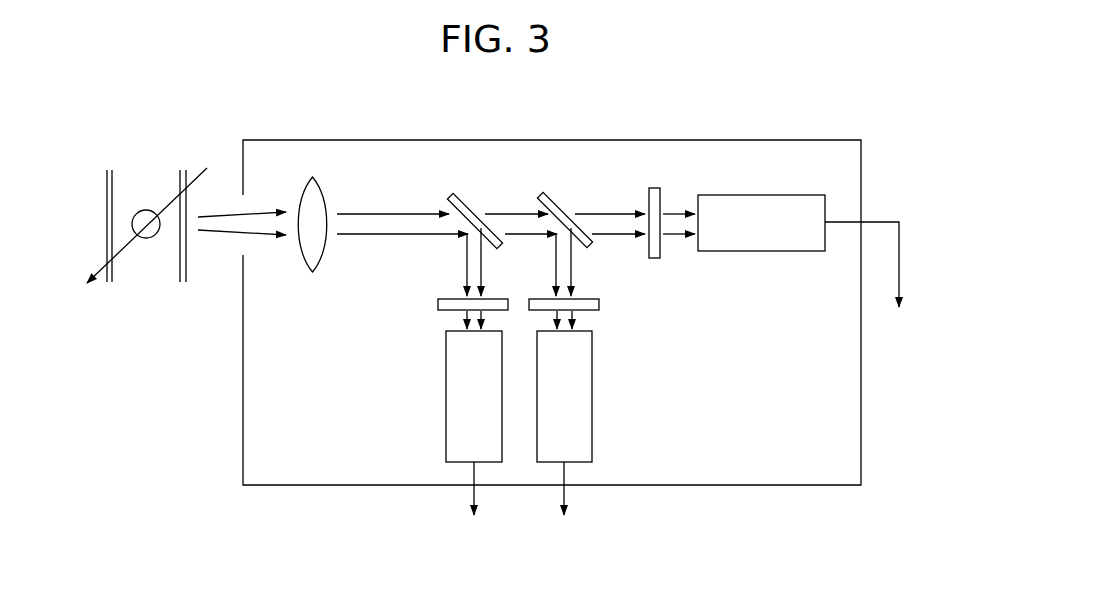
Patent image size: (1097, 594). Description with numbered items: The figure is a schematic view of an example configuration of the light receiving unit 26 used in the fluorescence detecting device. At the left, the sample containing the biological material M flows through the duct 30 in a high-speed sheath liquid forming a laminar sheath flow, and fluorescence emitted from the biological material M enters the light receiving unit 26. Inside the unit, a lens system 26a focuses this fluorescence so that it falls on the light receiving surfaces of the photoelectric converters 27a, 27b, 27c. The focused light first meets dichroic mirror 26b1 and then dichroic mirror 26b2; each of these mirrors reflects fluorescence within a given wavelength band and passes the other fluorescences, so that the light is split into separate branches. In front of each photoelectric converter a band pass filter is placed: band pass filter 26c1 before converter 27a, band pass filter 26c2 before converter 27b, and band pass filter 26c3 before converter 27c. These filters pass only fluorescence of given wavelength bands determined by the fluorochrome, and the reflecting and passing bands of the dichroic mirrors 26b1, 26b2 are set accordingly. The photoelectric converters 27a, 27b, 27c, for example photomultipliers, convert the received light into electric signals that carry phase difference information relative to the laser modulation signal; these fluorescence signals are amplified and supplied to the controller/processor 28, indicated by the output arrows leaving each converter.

The duct 30 is at (107, 172).
The biological material M is at (147, 210).
The light receiving unit 26 is at (388, 141).
The lens system 26a is at (312, 272).
The dichroic mirror 26b1 is at (470, 198).
The dichroic mirror 26b2 is at (560, 198).
The band pass filter 26c1 is at (438, 305).
The band pass filter 26c2 is at (599, 305).
The band pass filter 26c3 is at (655, 259).
The photoelectric converter 27a is at (446, 427).
The photoelectric converter 27b is at (592, 427).
The photoelectric converter 27c is at (777, 195).
The controller/processor 28 is at (688, 382).